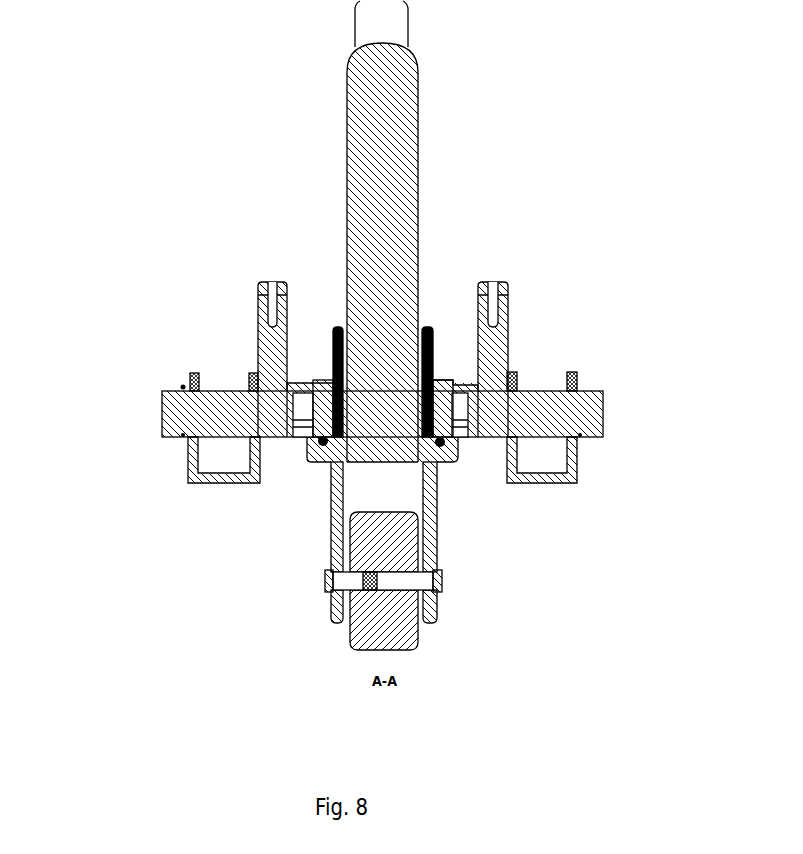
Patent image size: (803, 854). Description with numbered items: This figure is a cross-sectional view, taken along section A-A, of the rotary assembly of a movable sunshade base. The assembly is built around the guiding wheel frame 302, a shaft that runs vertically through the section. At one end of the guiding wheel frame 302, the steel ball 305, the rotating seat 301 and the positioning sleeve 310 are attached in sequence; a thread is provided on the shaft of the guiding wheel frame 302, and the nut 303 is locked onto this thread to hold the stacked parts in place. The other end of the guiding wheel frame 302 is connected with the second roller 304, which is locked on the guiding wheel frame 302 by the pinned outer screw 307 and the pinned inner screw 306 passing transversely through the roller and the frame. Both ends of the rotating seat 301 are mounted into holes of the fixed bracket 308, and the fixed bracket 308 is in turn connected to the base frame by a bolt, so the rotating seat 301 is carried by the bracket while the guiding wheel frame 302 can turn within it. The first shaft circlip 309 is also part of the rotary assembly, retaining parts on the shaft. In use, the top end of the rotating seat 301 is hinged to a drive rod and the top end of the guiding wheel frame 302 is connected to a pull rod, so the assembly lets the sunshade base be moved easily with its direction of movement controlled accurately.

The rotating seat 301 is at (493, 343).
The guiding wheel frame 302 is at (390, 225).
The nut 303 is at (430, 337).
The second roller 304 is at (400, 527).
The steel ball 305 is at (445, 445).
The pinned inner screw 306 is at (400, 580).
The pinned outer screw 307 is at (327, 580).
The fixed bracket 308 is at (250, 378).
The first shaft circlip 309 is at (190, 395).
The positioning sleeve 310 is at (333, 380).